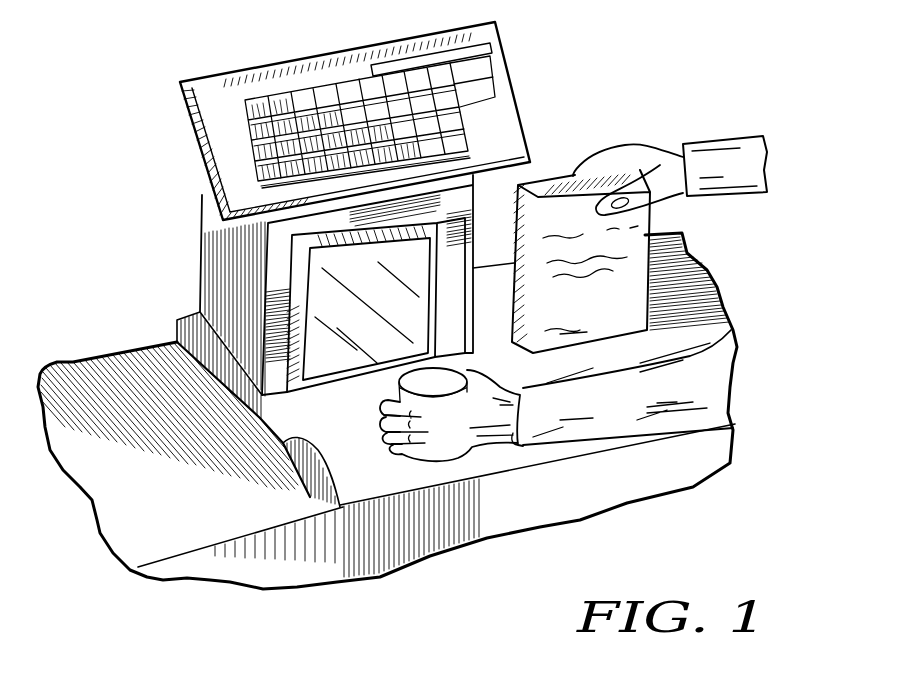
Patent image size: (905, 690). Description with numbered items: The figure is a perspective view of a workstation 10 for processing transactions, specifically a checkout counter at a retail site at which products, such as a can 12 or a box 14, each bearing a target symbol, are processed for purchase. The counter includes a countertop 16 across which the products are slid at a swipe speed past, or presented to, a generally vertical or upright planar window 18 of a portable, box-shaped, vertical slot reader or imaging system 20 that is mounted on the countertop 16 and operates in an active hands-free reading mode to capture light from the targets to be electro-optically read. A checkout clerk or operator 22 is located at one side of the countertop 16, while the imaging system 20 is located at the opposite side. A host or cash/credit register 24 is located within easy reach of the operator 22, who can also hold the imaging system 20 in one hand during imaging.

The workstation 10 is at (556, 150).
The can 12 is at (460, 457).
The box 14 is at (652, 221).
The countertop 16 is at (300, 438).
The planar window 18 is at (322, 358).
The imaging system 20 is at (318, 253).
The operator 22 is at (717, 367).
The cash/credit register 24 is at (303, 74).